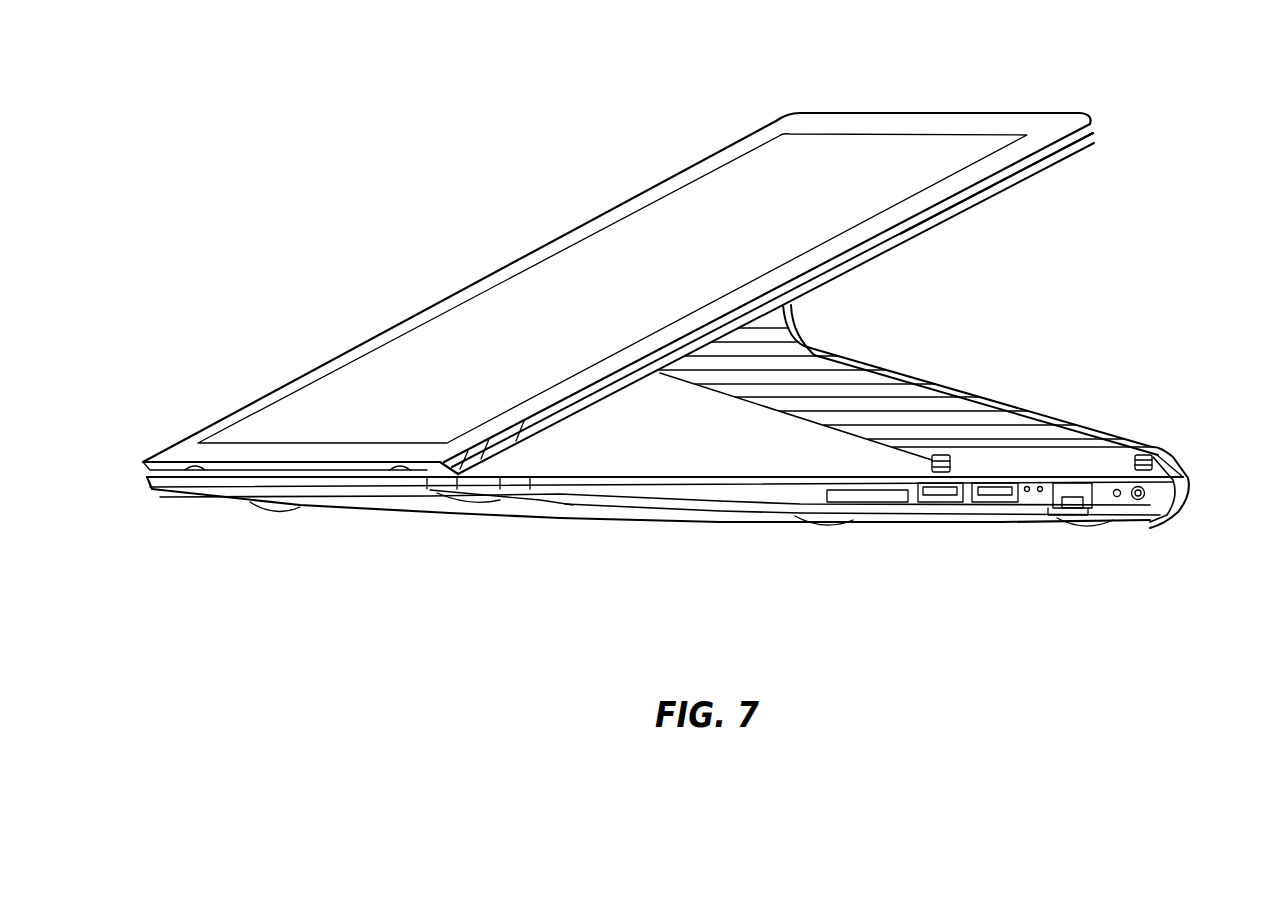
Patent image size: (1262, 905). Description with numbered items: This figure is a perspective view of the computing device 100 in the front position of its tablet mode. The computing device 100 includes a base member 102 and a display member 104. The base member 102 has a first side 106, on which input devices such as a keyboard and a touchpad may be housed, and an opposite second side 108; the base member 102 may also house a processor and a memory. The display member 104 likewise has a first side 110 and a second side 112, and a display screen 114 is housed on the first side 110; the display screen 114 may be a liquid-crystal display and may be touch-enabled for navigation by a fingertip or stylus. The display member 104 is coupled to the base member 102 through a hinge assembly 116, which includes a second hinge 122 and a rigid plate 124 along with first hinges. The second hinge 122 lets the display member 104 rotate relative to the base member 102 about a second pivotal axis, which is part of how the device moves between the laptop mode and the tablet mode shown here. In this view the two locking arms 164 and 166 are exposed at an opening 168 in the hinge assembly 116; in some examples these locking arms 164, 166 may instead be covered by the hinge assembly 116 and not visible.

The computing device 100 is at (311, 137).
The base member 102 is at (407, 505).
The display member 104 is at (728, 150).
The first side 106 is at (667, 475).
The second side 108 is at (923, 523).
The first side 110 is at (897, 124).
The second side 112 is at (987, 198).
The display screen 114 is at (627, 213).
The hinge assembly 116 is at (966, 353).
The second hinge 122 is at (797, 332).
The rigid plate 124 is at (780, 412).
The locking arm 164 is at (1156, 452).
The locking arm 166 is at (931, 466).
The opening 168 is at (940, 492).